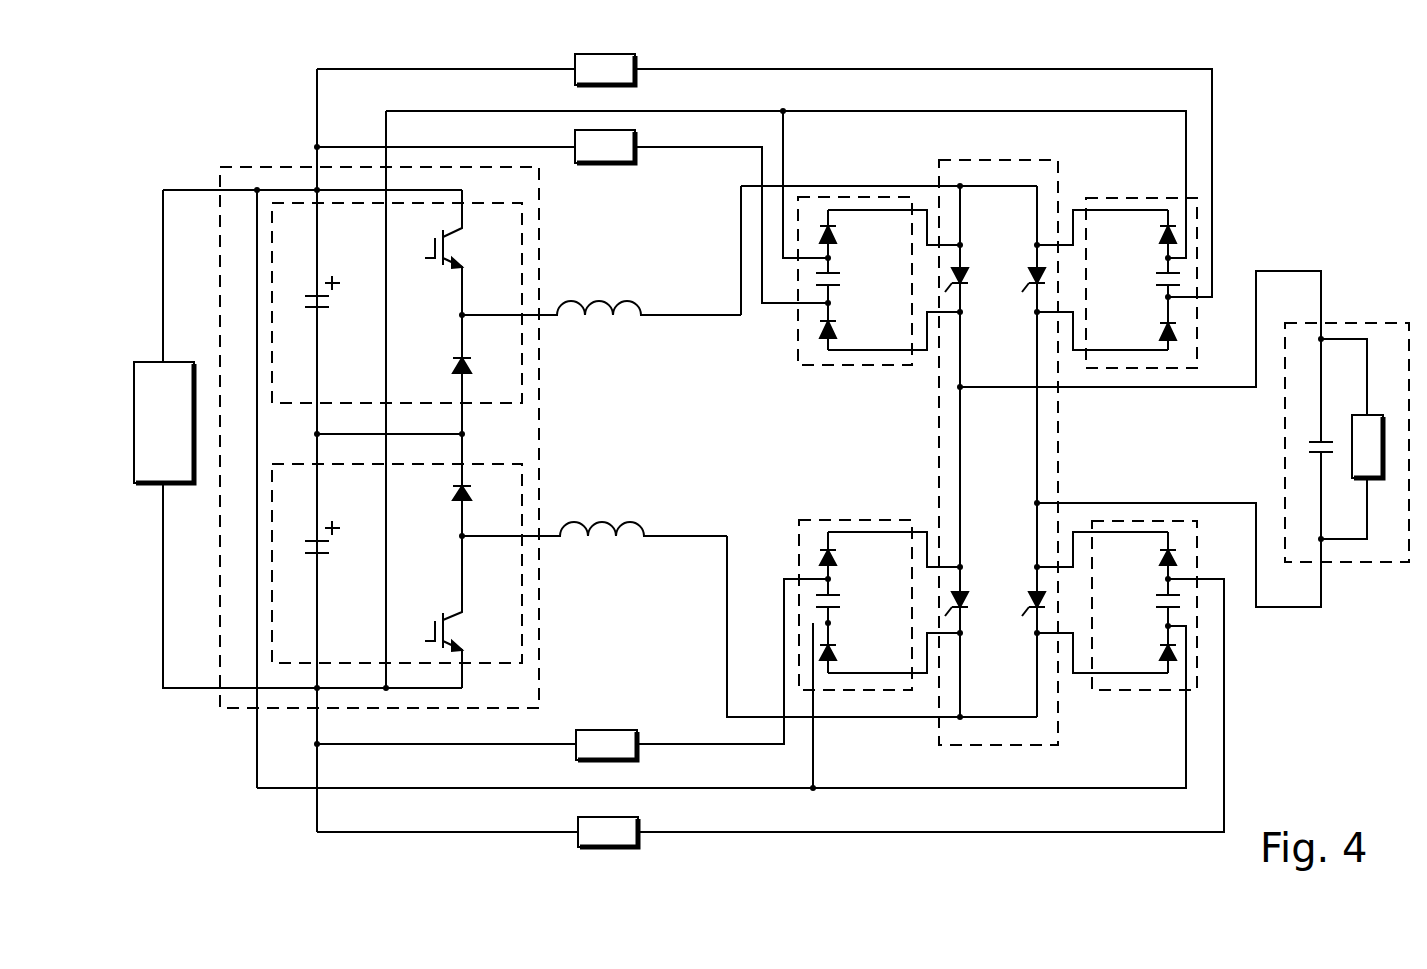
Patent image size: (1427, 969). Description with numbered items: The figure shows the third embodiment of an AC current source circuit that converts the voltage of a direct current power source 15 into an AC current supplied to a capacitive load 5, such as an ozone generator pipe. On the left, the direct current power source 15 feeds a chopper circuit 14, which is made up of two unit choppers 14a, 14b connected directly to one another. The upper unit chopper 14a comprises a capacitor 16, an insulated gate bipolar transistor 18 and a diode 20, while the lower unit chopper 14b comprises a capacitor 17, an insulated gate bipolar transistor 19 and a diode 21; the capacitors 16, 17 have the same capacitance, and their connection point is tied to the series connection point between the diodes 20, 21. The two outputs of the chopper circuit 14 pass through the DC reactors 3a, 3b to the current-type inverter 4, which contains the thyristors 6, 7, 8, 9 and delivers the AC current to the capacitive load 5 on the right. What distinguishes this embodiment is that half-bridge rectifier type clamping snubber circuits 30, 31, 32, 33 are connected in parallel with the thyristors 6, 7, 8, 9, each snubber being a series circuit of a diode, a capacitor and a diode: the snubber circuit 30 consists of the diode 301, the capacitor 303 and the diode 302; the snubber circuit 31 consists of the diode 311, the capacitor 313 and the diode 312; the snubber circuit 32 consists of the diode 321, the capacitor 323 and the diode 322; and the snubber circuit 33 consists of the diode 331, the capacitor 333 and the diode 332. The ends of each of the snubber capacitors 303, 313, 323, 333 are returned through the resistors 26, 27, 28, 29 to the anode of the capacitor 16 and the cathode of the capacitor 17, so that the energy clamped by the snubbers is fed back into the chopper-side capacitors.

The DC reactor 3a is at (600, 300).
The DC reactor 3b is at (600, 525).
The current-type inverter 4 is at (982, 162).
The capacitive load 5 is at (1343, 323).
The thyristor 6 is at (966, 278).
The thyristor 7 is at (966, 600).
The thyristor 8 is at (1030, 273).
The thyristor 9 is at (1030, 597).
The chopper circuit 14 is at (541, 413).
The unit chopper 14a is at (524, 366).
The unit chopper 14b is at (524, 512).
The direct current power source 15 is at (184, 437).
The capacitor 16 is at (322, 310).
The capacitor 17 is at (322, 556).
The insulated gate bipolar transistor 18 is at (452, 246).
The insulated gate bipolar transistor 19 is at (452, 632).
The diode 20 is at (452, 367).
The diode 21 is at (452, 497).
The resistor 26 is at (590, 166).
The resistor 27 is at (590, 730).
The resistor 28 is at (640, 822).
The resistor 29 is at (633, 58).
The half-bridge rectifier type clamping snubber circuit 30 is at (879, 302).
The half-bridge rectifier type clamping snubber circuit 31 is at (879, 583).
The half-bridge rectifier type clamping snubber circuit 32 is at (1117, 263).
The half-bridge rectifier type clamping snubber circuit 33 is at (1117, 627).
The diode 301 is at (837, 242).
The diode 302 is at (859, 328).
The capacitor 303 is at (835, 290).
The diode 311 is at (837, 558).
The diode 312 is at (837, 653).
The capacitor 313 is at (835, 612).
The diode 321 is at (1160, 242).
The diode 322 is at (1160, 330).
The capacitor 323 is at (1160, 283).
The diode 331 is at (1160, 559).
The diode 332 is at (1160, 653).
The capacitor 333 is at (1156, 613).